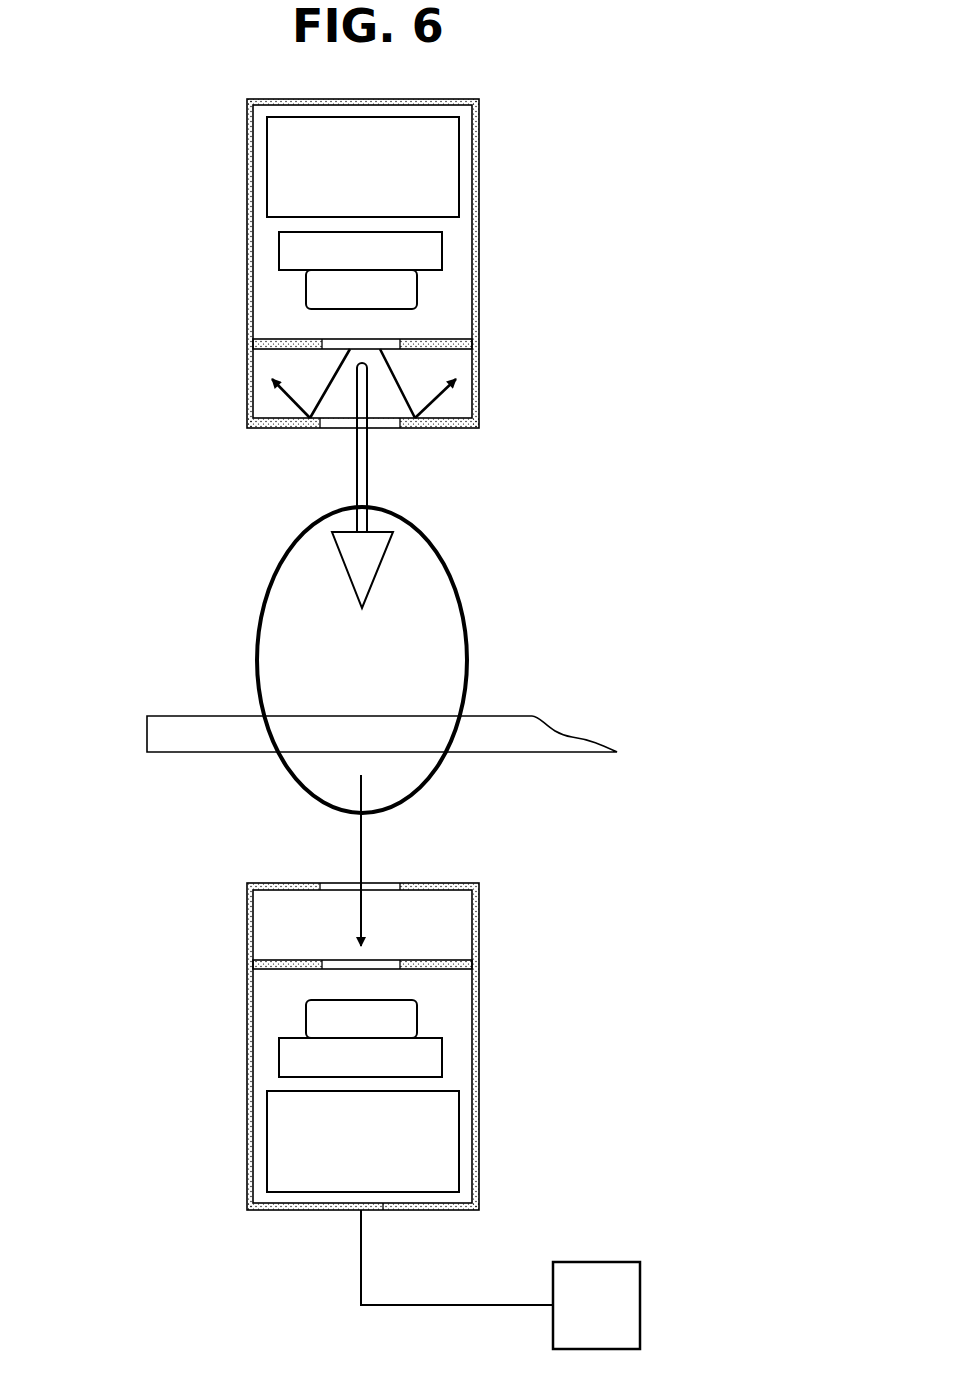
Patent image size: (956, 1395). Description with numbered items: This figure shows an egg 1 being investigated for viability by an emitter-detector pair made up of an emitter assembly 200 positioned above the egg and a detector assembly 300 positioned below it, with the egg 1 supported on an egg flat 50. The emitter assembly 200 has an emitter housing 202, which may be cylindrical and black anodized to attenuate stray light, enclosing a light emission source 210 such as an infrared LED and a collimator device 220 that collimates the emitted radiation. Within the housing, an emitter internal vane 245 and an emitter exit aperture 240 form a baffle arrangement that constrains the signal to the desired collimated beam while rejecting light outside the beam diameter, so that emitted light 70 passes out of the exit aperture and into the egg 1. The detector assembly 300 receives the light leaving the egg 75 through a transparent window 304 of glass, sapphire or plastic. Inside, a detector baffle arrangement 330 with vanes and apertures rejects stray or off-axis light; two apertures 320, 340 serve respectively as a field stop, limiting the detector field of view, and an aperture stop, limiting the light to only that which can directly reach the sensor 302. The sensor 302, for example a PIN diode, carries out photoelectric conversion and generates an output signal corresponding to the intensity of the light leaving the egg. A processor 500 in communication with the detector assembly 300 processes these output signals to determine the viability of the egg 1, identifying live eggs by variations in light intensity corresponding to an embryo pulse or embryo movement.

The emitter assembly 200 is at (391, 270).
The emitter housing 202 is at (478, 217).
The light emission source 210 is at (294, 248).
The collimator device 220 is at (408, 293).
The emitter internal vane 245 is at (330, 356).
The emitter exit aperture 240 is at (392, 438).
The emitted light 70 is at (357, 479).
The egg 1 is at (432, 592).
The egg flat 50 is at (177, 727).
The light leaving the egg 75 is at (363, 831).
The transparent window 304 is at (390, 885).
The aperture 320 is at (342, 876).
The detector baffle arrangement 330 is at (288, 913).
The aperture 340 is at (388, 954).
The sensor 302 is at (443, 1137).
The detector assembly 300 is at (325, 1014).
The processor 500 is at (622, 1324).